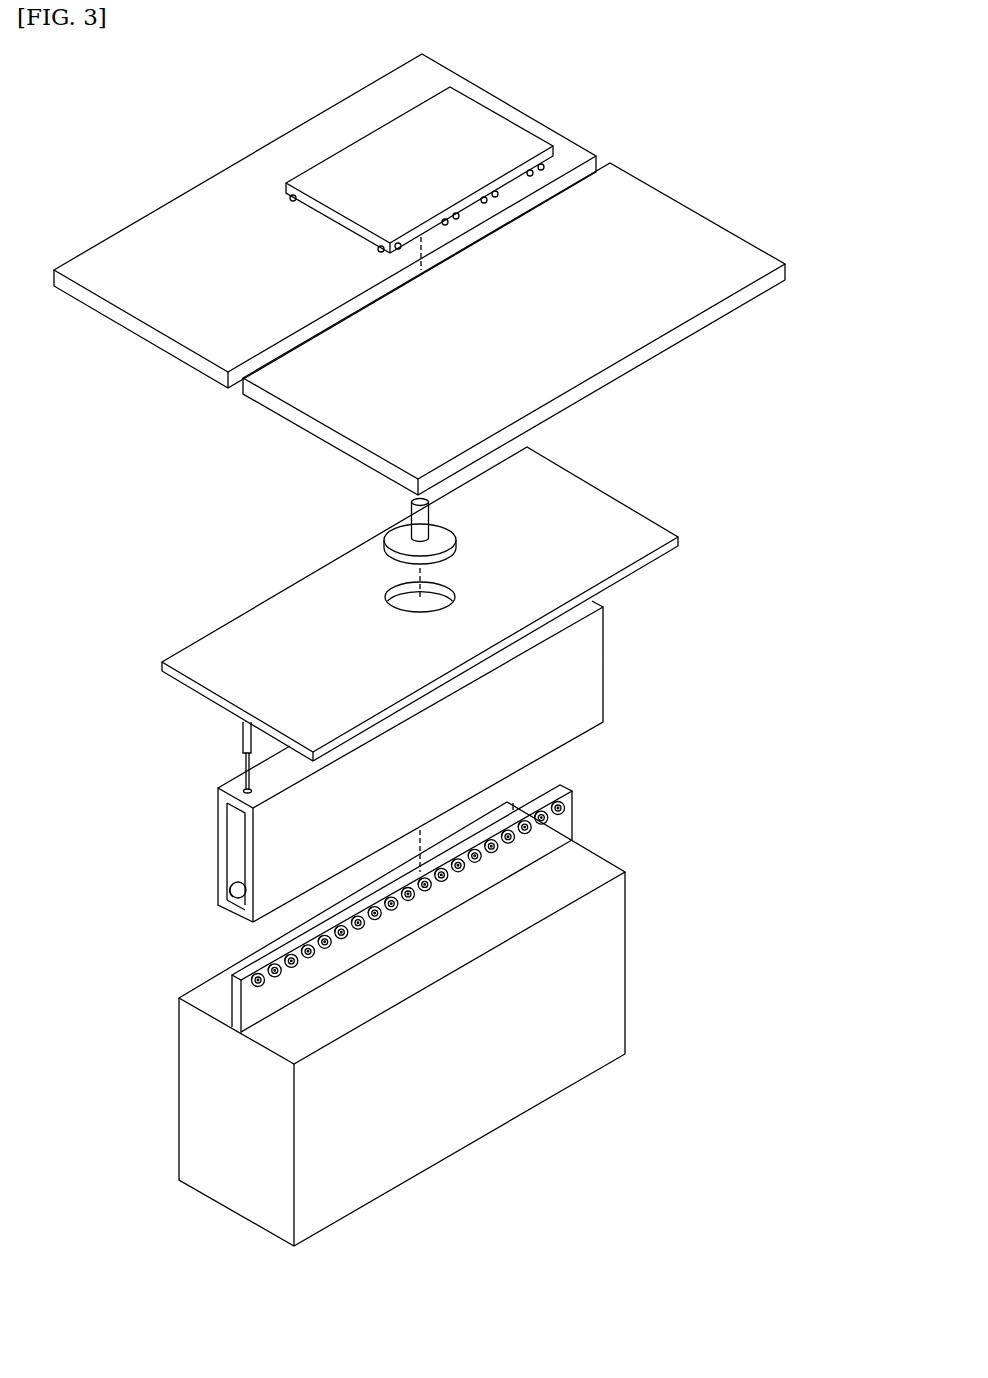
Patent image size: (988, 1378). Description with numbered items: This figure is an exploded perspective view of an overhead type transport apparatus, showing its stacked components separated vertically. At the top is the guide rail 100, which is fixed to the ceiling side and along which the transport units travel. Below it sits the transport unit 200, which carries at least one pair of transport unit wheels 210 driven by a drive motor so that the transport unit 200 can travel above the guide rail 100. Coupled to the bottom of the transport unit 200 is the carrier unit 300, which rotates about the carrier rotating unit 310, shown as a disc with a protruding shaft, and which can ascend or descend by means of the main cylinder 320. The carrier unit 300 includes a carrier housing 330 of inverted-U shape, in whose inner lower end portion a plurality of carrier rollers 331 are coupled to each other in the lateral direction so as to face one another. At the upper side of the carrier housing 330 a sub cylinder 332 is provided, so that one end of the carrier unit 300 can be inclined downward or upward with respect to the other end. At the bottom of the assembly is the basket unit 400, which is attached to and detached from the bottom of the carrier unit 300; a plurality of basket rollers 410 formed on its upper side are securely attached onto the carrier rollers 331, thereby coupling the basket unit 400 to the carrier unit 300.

The guide rail 100 is at (228, 387).
The transport unit 200 is at (333, 152).
The transport unit wheels 210 is at (547, 166).
The carrier unit 300 is at (620, 580).
The carrier rotating unit 310 is at (385, 548).
The main cylinder 320 is at (415, 523).
The carrier housing 330 is at (218, 845).
The carrier rollers 331 is at (236, 891).
The sub cylinder 332 is at (243, 737).
The basket unit 400 is at (502, 1119).
The basket rollers 410 is at (565, 810).